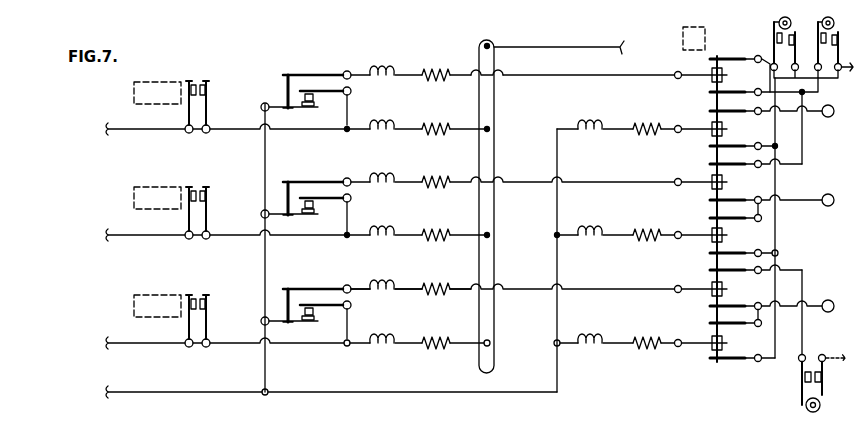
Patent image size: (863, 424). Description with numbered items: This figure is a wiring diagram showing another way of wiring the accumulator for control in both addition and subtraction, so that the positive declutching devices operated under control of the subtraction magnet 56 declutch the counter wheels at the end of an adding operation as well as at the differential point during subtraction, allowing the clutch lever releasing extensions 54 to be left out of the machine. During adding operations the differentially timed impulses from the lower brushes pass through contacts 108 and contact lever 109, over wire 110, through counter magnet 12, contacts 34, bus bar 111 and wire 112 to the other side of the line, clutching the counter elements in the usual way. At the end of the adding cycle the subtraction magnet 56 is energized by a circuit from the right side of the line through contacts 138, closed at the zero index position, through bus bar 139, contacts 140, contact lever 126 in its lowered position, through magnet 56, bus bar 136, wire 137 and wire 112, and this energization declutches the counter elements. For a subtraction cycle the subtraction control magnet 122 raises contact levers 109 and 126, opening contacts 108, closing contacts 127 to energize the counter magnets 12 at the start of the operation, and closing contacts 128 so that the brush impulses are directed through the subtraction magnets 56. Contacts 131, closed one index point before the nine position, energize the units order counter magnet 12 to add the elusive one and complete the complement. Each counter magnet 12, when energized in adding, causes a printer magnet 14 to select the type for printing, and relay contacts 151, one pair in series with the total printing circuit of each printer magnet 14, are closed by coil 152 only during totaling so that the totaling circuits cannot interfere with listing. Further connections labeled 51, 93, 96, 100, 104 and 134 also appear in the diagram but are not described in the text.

The counter magnet 12 is at (381, 58).
The printer magnet 14 is at (380, 348).
The contacts 34 is at (283, 300).
The conductor 51 is at (525, 422).
The clutch lever releasing extensions 54 is at (439, 415).
The subtraction magnet 56 is at (596, 124).
The conductor 93 is at (109, 419).
The conductor 96 is at (66, 413).
The conductor 100 is at (244, 417).
The conductor 104 is at (189, 417).
The contacts 108 is at (640, 303).
The contact lever 109 is at (708, 88).
The wire 110 is at (522, 75).
The bus bar 111 is at (270, 368).
The wire 112 is at (178, 392).
The subtraction control magnet 122 is at (683, 38).
The contact lever 126 is at (693, 131).
The contacts 127 is at (713, 172).
The contacts 128 is at (710, 332).
The contacts 131 is at (800, 380).
The switch arm 134 is at (815, 42).
The bus bar 136 is at (562, 383).
The wire 137 is at (333, 393).
The contacts 138 is at (772, 50).
The bus bar 139 is at (778, 238).
The contacts 140 is at (725, 143).
The relay contacts 151 is at (198, 80).
The coil 152 is at (146, 81).